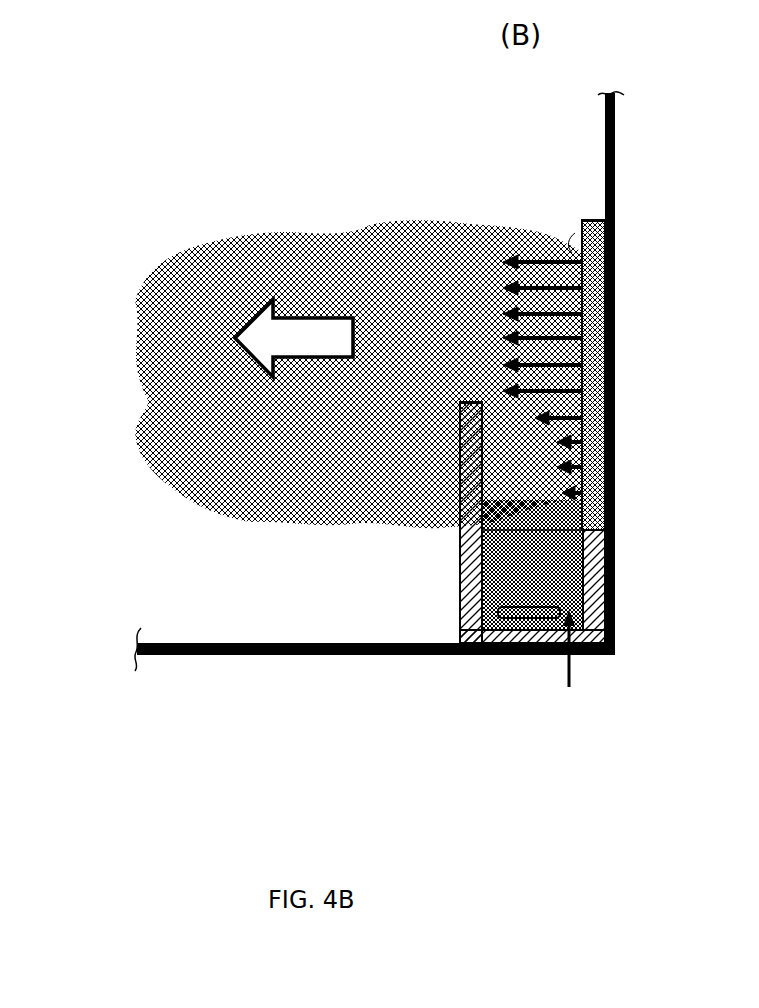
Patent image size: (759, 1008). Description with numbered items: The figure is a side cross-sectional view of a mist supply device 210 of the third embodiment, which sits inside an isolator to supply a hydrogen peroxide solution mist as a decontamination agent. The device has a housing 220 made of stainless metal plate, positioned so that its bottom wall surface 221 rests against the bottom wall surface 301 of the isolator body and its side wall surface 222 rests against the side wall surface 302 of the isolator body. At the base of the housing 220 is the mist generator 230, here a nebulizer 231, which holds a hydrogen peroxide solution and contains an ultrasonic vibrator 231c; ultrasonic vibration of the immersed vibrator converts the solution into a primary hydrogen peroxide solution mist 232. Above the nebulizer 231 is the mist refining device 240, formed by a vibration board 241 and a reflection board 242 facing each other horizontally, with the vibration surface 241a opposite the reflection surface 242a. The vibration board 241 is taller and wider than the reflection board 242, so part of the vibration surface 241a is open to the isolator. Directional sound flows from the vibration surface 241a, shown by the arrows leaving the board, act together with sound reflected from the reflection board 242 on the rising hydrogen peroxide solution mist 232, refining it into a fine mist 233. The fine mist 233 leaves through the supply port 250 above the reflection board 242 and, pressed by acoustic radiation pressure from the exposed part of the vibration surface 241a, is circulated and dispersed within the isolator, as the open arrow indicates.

The mist supply device 210 is at (447, 133).
The housing 220 is at (460, 518).
The bottom wall surface 221 is at (490, 657).
The side wall surface 222 is at (615, 567).
The mist generator 230 is at (528, 695).
The nebulizer 231 is at (452, 598).
The ultrasonic vibrator 231c is at (520, 655).
The hydrogen peroxide solution mist 232 is at (460, 556).
The fine mist 233 is at (383, 323).
The mist refining device 240 is at (578, 218).
The vibration board 241 is at (615, 330).
The vibration surface 241a is at (615, 227).
The reflection board 242 is at (455, 467).
The reflection surface 242a is at (455, 425).
The supply port 250 is at (487, 363).
The bottom wall surface of isolator body 301 is at (260, 655).
The side wall surface of isolator body 302 is at (615, 160).